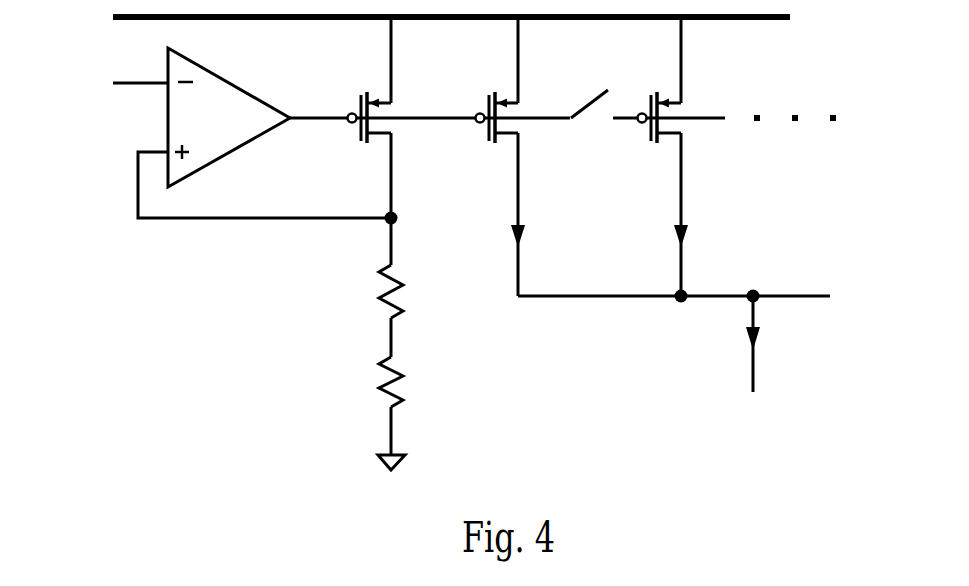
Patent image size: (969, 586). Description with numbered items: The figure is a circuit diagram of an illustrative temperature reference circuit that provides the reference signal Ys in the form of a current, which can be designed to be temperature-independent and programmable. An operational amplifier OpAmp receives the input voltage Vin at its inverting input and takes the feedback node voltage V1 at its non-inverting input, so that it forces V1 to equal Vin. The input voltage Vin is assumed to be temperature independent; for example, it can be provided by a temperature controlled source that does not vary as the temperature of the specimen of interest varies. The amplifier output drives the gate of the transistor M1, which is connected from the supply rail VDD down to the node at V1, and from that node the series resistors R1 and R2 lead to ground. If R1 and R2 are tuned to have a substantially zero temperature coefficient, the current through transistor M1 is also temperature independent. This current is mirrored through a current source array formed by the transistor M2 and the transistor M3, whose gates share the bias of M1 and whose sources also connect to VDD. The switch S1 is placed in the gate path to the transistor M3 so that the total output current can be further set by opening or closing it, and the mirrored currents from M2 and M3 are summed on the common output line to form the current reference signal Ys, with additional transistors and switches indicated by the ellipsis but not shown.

The supply voltage rail VDD is at (482, 17).
The input voltage Vin is at (118, 78).
The operational amplifier OpAmp is at (264, 133).
The transistor M1 is at (390, 117).
The transistor M2 is at (517, 156).
The transistor M3 is at (682, 156).
The switch S1 is at (604, 123).
The feedback node voltage V1 is at (409, 212).
The resistor R1 is at (407, 268).
The resistor R2 is at (407, 386).
The reference signal Ys is at (674, 341).